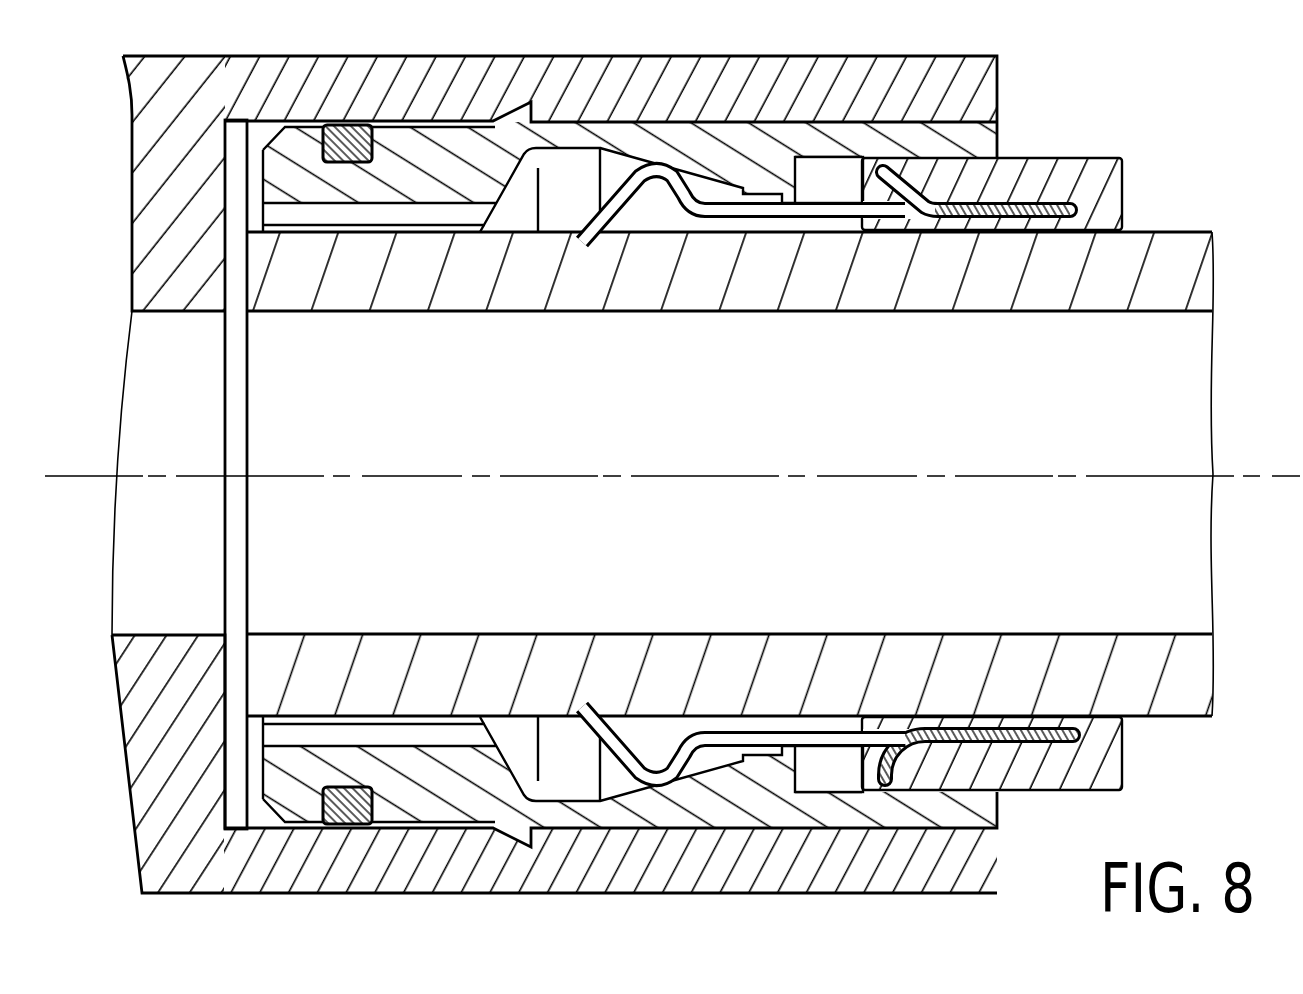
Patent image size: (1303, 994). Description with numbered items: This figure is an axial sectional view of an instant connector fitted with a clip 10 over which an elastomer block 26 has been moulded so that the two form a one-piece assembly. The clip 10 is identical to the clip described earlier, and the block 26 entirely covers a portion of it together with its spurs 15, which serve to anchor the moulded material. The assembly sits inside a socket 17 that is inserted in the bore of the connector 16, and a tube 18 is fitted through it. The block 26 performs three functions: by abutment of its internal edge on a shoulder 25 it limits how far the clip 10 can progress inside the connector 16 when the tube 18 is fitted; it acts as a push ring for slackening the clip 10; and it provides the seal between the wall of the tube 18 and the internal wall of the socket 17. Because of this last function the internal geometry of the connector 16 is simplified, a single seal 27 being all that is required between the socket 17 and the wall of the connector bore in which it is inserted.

The clip 10 is at (807, 217).
The spurs 15 is at (905, 190).
The connector 16 is at (990, 862).
The socket 17 is at (985, 133).
The tube 18 is at (1208, 267).
The shoulder 25 is at (800, 173).
The elastomer block 26 is at (1122, 190).
The seal 27 is at (355, 163).